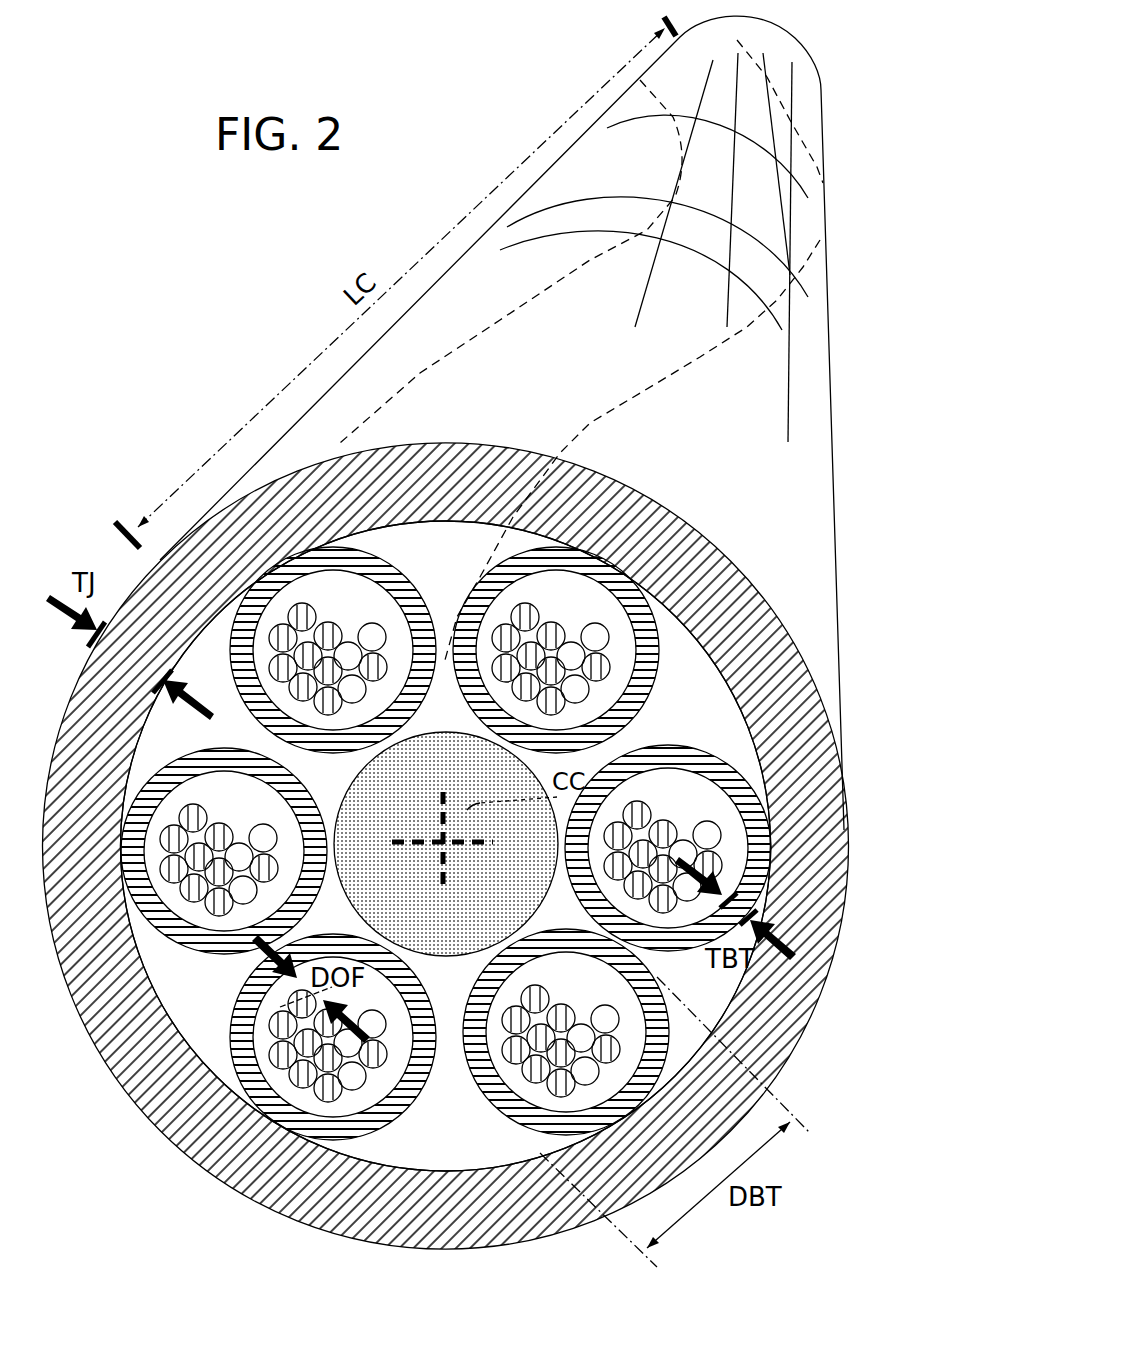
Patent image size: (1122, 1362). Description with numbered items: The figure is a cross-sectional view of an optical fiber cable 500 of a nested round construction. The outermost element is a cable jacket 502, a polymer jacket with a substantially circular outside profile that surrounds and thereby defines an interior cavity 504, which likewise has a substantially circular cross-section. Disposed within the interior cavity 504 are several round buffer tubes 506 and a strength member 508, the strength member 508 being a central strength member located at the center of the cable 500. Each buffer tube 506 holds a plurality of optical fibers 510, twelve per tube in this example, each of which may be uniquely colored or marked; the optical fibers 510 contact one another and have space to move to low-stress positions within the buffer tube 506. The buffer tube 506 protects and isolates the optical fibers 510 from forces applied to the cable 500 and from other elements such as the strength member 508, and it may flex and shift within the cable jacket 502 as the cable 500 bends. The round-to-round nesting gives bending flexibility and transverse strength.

The optical fiber cable 500 is at (873, 490).
The cable jacket 502 is at (720, 550).
The interior cavity 504 is at (713, 687).
The buffer tube 506 is at (403, 578).
The strength member 508 is at (418, 927).
The optical fiber 510 is at (303, 612).